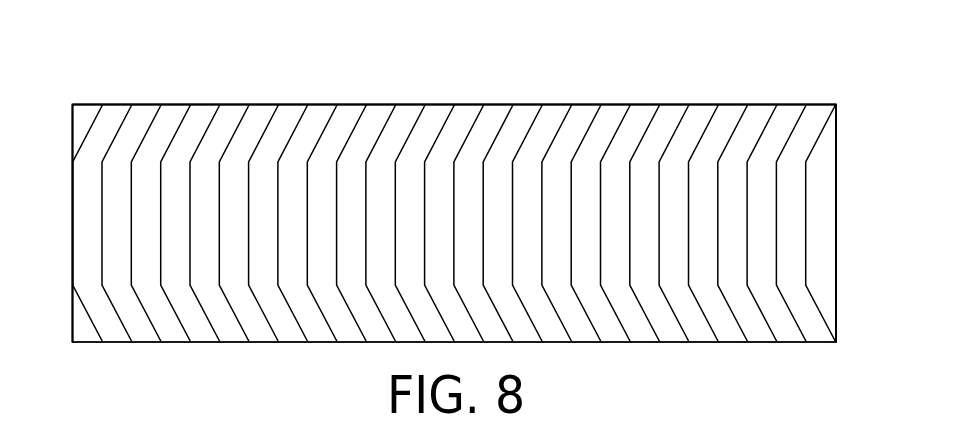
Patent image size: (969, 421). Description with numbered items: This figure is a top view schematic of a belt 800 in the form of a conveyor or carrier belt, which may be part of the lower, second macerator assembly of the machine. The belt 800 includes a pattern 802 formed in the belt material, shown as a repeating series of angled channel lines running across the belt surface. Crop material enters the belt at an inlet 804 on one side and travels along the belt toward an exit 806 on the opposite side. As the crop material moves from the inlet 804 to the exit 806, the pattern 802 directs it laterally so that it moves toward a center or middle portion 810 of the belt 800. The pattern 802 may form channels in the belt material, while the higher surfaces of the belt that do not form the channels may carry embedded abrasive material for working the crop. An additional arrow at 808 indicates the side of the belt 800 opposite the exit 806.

The belt 800 is at (126, 65).
The pattern 802 is at (580, 104).
The inlet 804 is at (415, 123).
The exit 806 is at (868, 220).
The inlet side 808 is at (64, 223).
The center or middle portion 810 is at (560, 262).